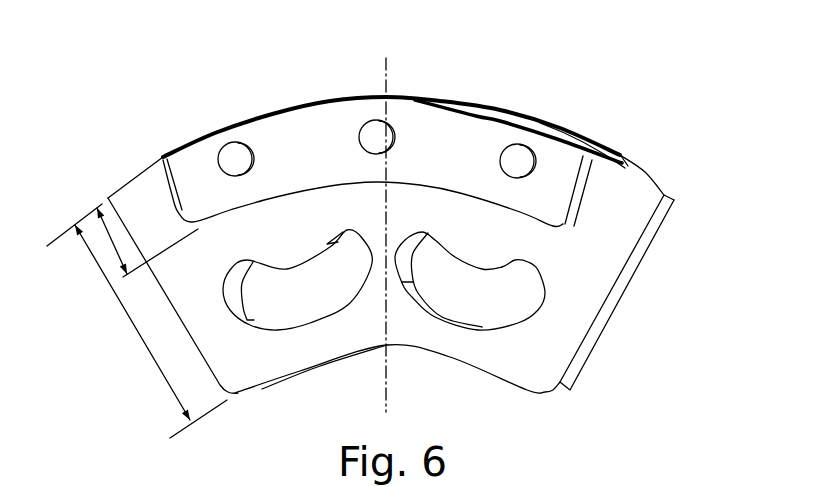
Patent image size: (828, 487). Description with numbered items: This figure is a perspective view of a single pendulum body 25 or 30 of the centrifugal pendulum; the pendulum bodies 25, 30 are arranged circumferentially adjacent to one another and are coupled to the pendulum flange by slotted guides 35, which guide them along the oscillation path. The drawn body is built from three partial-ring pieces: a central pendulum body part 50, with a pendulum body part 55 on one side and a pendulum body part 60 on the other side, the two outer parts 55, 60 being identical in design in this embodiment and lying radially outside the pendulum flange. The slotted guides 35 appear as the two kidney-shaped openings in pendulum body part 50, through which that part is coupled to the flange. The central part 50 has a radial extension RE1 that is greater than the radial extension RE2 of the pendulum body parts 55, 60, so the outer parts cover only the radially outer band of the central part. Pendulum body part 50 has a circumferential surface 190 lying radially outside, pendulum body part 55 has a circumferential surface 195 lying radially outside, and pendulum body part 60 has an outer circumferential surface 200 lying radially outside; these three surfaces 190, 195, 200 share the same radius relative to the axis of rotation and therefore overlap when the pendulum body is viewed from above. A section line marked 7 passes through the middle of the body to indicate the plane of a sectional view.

The pendulum body 25 is at (391, 90).
The pendulum body 30 is at (490, 97).
The circumferential surface 195 is at (530, 117).
The outer circumferential surface 200 is at (572, 130).
The pendulum body part 60 is at (610, 147).
The circumferential surface 190 is at (632, 163).
The pendulum body part 50 is at (642, 200).
The pendulum body part 55 is at (567, 183).
The slotted guide 35 is at (458, 342).
The section line 7- 7 is at (383, 70).
The radial extension RE1 is at (133, 332).
The radial extension RE2 is at (115, 250).